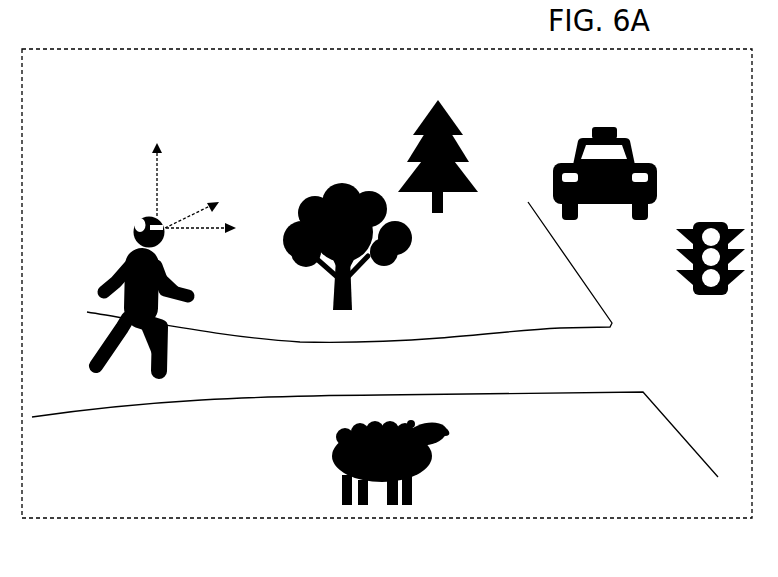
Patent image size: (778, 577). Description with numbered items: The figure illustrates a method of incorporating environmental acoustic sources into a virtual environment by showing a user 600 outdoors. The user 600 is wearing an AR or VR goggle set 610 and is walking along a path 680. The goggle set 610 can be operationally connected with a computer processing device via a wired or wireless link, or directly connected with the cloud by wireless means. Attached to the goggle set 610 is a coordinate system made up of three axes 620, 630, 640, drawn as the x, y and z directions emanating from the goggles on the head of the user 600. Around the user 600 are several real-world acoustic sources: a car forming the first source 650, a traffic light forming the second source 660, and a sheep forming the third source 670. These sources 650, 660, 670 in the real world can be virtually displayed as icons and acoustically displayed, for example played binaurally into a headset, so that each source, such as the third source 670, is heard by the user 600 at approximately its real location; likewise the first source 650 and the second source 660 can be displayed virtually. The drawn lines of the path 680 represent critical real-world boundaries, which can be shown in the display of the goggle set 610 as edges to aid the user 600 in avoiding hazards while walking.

The user 600 is at (122, 258).
The AR or VR goggle set 610 is at (163, 232).
The coordinate system axis 620 is at (220, 213).
The coordinate system axis 630 is at (204, 197).
The coordinate system axis 640 is at (161, 166).
The source S1 650 is at (605, 147).
The source S2 660 is at (710, 234).
The source S3 670 is at (382, 457).
The path 680 is at (558, 385).